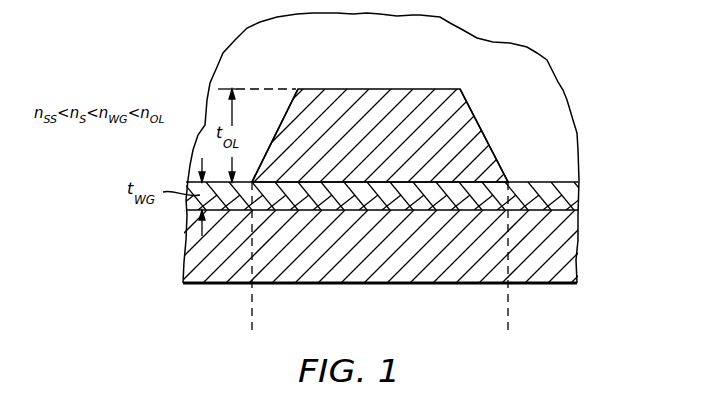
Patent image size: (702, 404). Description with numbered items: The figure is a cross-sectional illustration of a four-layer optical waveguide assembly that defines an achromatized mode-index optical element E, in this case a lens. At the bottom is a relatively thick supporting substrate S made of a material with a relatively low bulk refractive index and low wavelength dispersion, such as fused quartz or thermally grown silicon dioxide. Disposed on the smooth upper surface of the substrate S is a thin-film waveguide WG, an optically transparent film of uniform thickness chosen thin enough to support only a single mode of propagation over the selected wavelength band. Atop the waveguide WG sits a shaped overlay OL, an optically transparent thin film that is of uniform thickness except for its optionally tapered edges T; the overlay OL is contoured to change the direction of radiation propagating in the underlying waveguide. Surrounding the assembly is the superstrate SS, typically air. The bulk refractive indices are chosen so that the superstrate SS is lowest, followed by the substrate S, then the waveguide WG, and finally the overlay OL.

The superstrate SS is at (545, 90).
The supporting substrate S is at (558, 243).
The thin-film waveguide WG is at (570, 198).
The shaped overlay OL is at (482, 152).
The tapered edges T is at (280, 128).
The achromatized mode-index optical element E is at (378, 74).